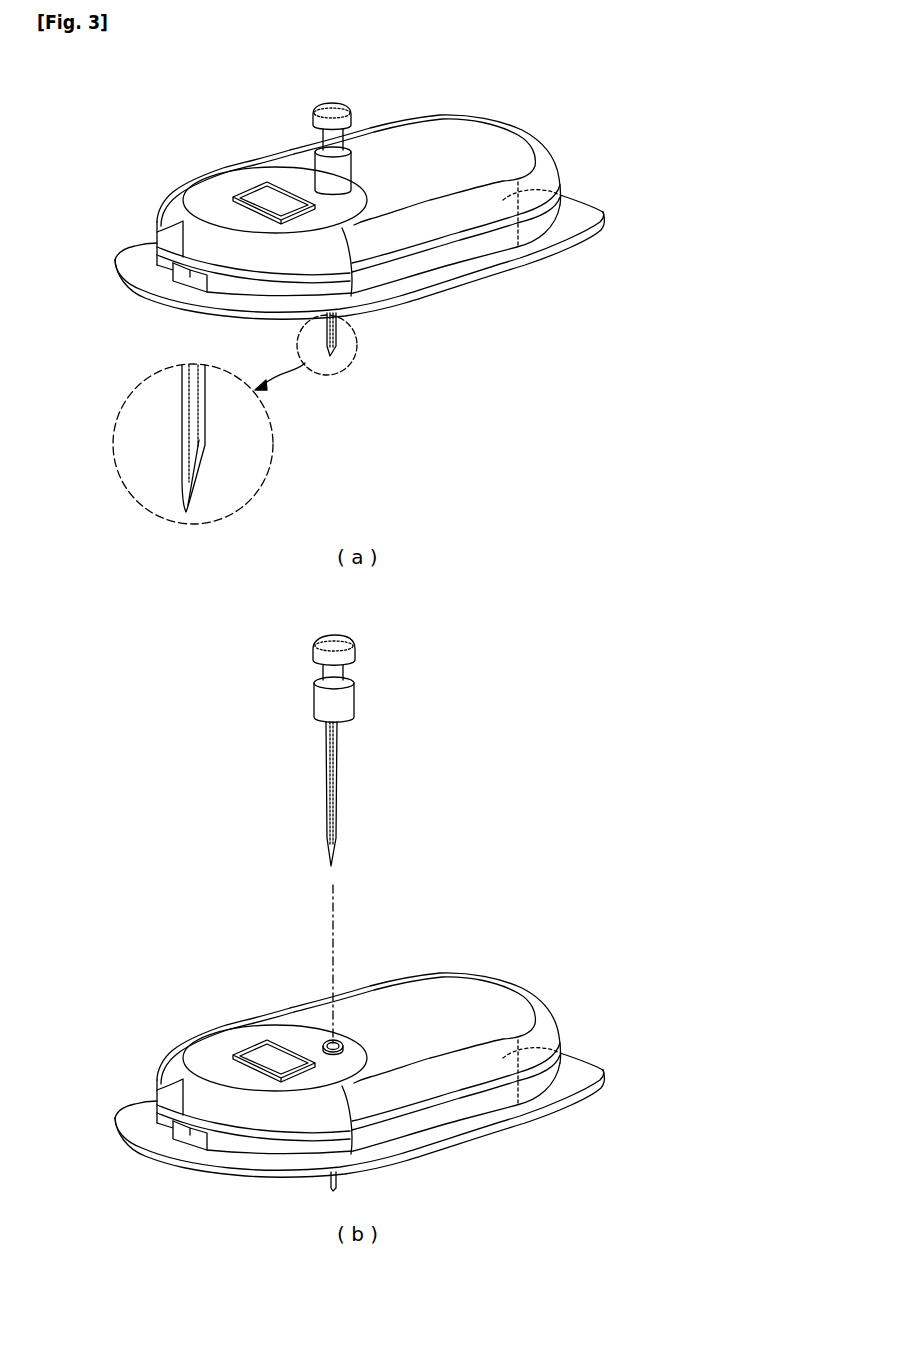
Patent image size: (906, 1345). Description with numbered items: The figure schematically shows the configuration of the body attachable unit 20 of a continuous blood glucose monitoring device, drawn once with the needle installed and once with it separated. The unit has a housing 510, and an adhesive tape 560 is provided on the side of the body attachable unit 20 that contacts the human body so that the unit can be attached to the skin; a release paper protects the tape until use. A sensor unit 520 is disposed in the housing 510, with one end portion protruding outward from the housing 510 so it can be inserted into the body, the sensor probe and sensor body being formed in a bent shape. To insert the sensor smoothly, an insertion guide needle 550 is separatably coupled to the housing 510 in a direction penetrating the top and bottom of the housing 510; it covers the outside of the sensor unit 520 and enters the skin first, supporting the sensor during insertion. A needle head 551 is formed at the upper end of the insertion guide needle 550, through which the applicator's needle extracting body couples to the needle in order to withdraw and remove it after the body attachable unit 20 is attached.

The body attachable unit 20 is at (552, 113).
The housing 510 is at (603, 205).
The adhesive tape 560 is at (580, 227).
The sensor unit 520 is at (190, 393).
The insertion guide needle 550 is at (183, 427).
The needle head 551 is at (340, 671).